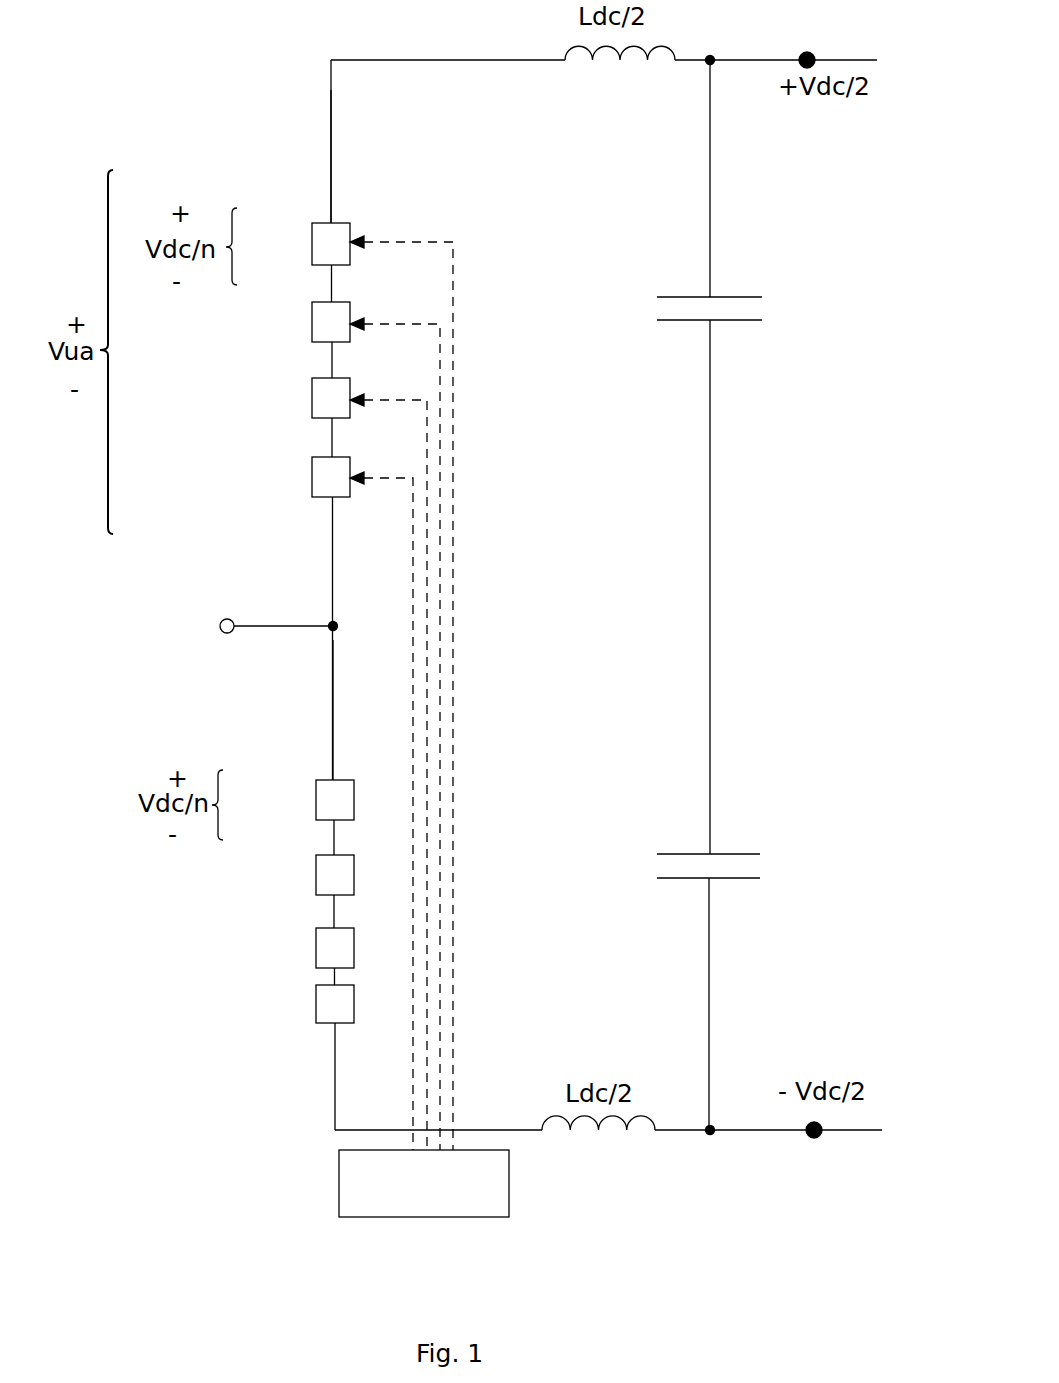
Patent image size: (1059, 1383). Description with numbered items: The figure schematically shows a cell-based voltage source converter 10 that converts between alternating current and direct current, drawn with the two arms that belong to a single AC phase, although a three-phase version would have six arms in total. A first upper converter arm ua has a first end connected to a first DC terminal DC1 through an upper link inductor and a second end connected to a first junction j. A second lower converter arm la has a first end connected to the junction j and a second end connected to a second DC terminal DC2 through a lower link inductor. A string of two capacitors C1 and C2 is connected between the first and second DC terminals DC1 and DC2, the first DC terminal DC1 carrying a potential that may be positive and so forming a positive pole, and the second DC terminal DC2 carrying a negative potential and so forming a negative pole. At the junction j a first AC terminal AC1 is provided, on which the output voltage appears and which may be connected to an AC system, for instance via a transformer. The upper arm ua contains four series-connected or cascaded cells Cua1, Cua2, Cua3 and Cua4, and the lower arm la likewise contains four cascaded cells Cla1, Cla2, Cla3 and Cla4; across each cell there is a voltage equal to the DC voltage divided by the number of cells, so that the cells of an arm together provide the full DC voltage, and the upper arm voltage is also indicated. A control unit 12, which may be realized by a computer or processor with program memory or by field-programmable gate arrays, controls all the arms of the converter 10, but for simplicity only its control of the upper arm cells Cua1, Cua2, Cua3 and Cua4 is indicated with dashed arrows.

The cell-based voltage source converter 10 is at (222, 83).
The control unit 12 is at (339, 1185).
The first upper converter arm ua is at (331, 170).
The second lower converter arm la is at (333, 720).
The first junction j is at (333, 626).
The first AC terminal AC1 is at (244, 626).
The first DC terminal DC1 is at (800, 55).
The second DC terminal DC2 is at (812, 1138).
The capacitor C1 is at (744, 298).
The capacitor C2 is at (739, 863).
The cell Cua1 is at (348, 686).
The cell Cua2 is at (341, 726).
The cell Cua3 is at (335, 764).
The cell Cua4 is at (328, 803).
The cell Cla1 is at (307, 800).
The cell Cla2 is at (307, 875).
The cell Cla3 is at (307, 948).
The cell Cla4 is at (307, 1004).